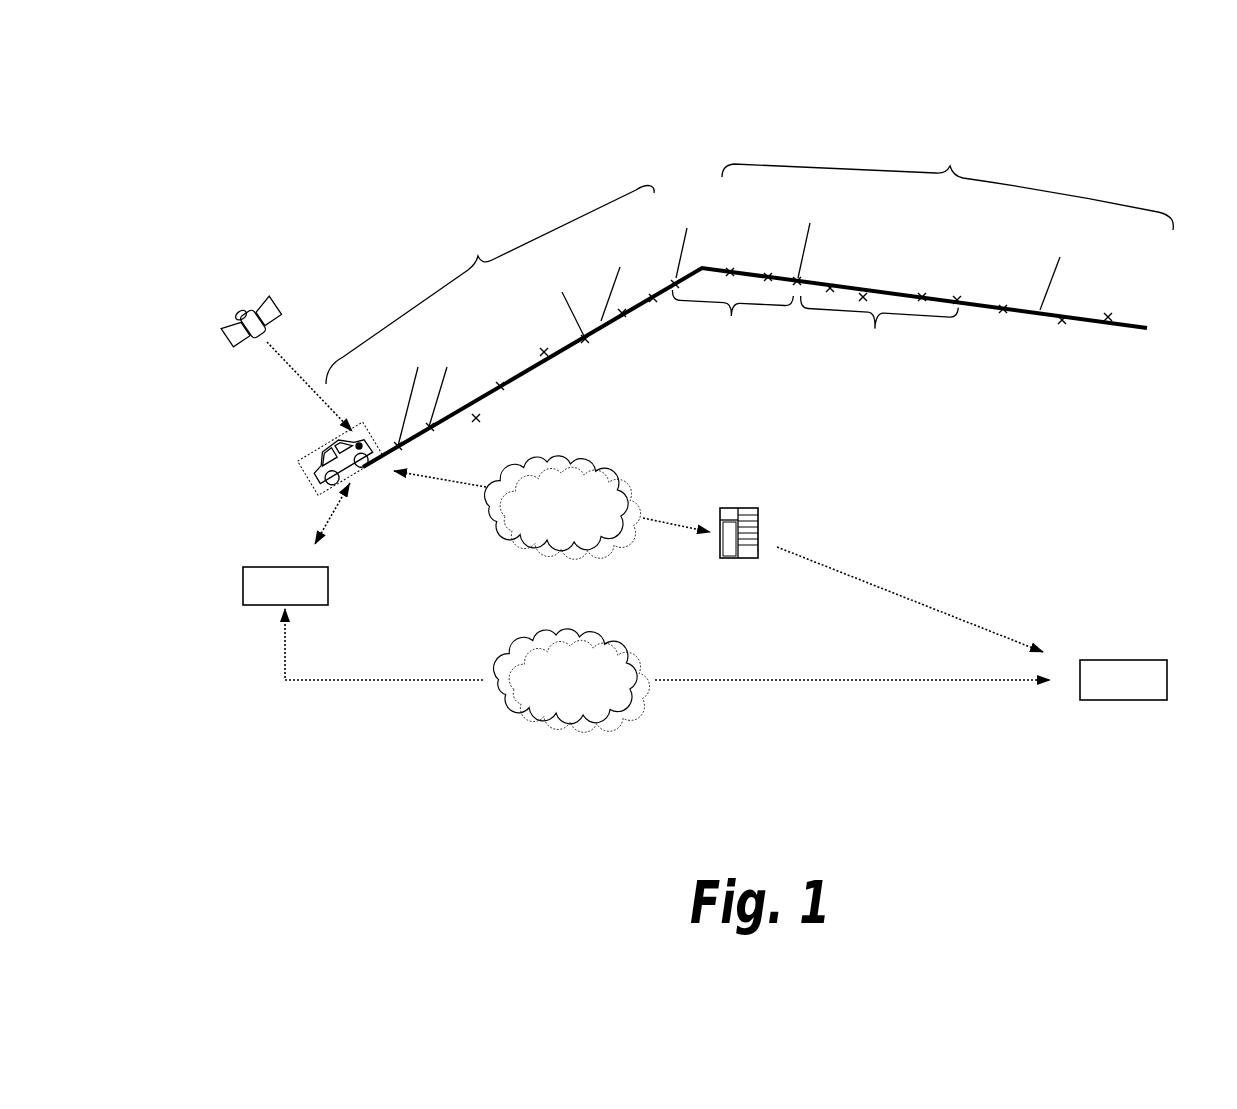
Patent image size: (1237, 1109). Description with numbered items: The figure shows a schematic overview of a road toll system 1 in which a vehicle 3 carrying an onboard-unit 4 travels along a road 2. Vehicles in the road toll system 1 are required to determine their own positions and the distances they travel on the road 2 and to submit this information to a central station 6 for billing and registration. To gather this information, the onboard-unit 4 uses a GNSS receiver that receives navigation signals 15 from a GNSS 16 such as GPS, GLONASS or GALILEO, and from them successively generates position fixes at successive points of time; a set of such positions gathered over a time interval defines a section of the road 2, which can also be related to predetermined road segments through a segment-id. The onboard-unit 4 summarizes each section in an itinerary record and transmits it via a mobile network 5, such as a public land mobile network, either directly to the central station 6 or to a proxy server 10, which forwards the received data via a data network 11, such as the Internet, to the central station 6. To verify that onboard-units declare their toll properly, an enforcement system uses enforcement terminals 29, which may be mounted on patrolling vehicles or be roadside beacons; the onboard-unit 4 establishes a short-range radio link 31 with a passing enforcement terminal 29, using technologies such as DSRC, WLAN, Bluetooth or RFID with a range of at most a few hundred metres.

The road toll system 1 is at (1119, 165).
The road 2 is at (1160, 290).
The vehicle 3 is at (330, 463).
The onboard-unit (OBU) 4 is at (359, 444).
The mobile network 5 is at (493, 550).
The central station 6 is at (1148, 660).
The proxy server 10 is at (760, 512).
The data network 11 is at (882, 590).
The navigation signals 15 is at (306, 382).
The global navigation satellite system (GNSS) 16 is at (272, 300).
The enforcement terminal 29 is at (243, 585).
The radio link 31 is at (333, 508).